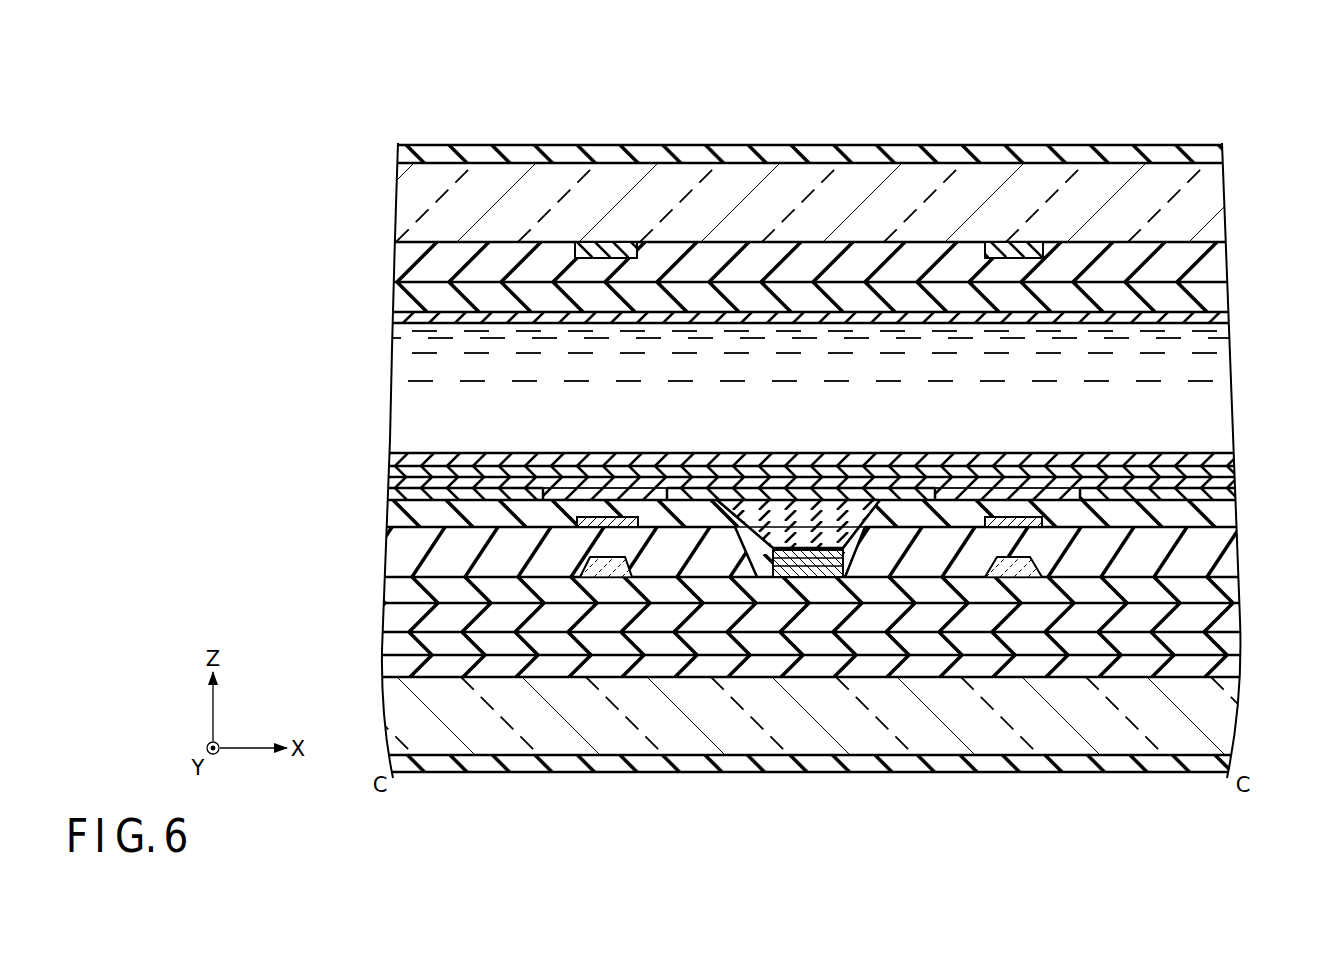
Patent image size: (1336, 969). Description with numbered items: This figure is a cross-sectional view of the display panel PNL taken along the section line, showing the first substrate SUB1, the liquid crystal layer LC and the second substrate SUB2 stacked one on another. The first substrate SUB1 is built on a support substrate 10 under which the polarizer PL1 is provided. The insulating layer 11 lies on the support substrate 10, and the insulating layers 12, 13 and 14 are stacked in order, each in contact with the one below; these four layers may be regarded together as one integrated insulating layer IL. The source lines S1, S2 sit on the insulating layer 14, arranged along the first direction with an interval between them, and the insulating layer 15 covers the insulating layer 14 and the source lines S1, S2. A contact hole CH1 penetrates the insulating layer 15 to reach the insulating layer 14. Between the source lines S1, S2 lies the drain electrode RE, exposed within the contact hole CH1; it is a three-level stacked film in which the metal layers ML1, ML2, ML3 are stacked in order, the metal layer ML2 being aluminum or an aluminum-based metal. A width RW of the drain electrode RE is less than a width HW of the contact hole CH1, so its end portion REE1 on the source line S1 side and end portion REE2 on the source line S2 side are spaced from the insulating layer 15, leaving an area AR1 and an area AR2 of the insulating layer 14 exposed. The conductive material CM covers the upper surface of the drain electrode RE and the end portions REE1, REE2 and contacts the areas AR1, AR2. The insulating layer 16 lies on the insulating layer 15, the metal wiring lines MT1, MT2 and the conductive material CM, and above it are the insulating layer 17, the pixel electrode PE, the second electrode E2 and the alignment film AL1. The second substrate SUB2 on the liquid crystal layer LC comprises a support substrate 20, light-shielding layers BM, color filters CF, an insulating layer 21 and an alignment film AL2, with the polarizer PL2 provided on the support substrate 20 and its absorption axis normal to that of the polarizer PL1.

The display panel PNL is at (1080, 112).
The first substrate SUB1 is at (366, 686).
The second substrate SUB2 is at (372, 201).
The polarizer PL1 is at (1218, 768).
The polarizer PL2 is at (1218, 154).
The support substrate 10 is at (1218, 723).
The insulating layer 11 is at (1218, 673).
The insulating layer 12 is at (1218, 648).
The insulating layer 13 is at (1218, 621).
The insulating layer 14 is at (1218, 593).
The insulating layer 15 is at (1226, 546).
The insulating layer 16 is at (1218, 516).
The insulating layer 17 is at (1218, 490).
The insulating layer IL is at (1300, 575).
The support substrate 20 is at (1218, 207).
The insulating layer 21 is at (1218, 294).
The color filter CF is at (515, 262).
The light-shielding layer BM is at (606, 255).
The alignment film AL1 is at (1218, 460).
The alignment film AL2 is at (1218, 322).
The liquid crystal layer LC is at (420, 402).
The pixel electrode PE is at (410, 492).
The second electrode E2 is at (486, 472).
The metal wiring line MT1 is at (598, 522).
The metal wiring line MT2 is at (1012, 520).
The source line S1 is at (598, 562).
The source line S2 is at (1010, 562).
The drain electrode RE is at (779, 573).
The metal layer ML1 is at (792, 548).
The metal layer ML2 is at (808, 566).
The metal layer ML3 is at (828, 560).
The contact hole CH1 is at (854, 528).
The end portion REE1 is at (771, 560).
The end portion REE2 is at (848, 548).
The area AR1 is at (757, 576).
The area AR2 is at (855, 575).
The conductive material CM is at (878, 554).
The width of the drain electrode RW is at (843, 580).
The width of the contact hole HW is at (866, 580).